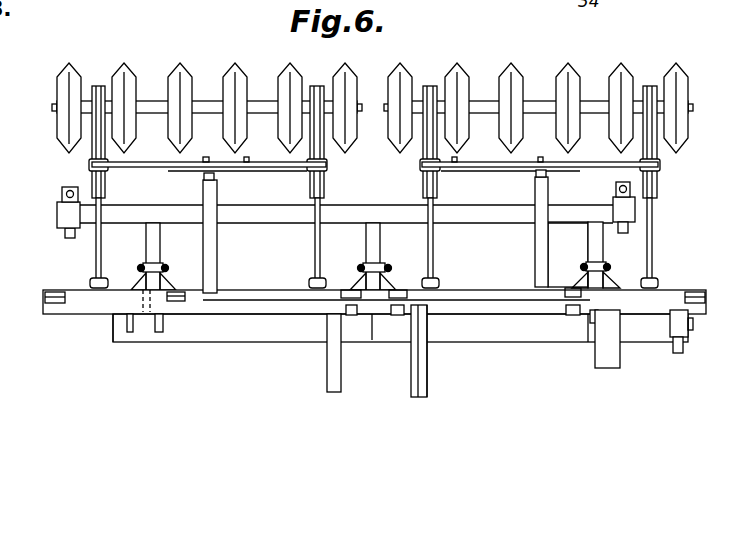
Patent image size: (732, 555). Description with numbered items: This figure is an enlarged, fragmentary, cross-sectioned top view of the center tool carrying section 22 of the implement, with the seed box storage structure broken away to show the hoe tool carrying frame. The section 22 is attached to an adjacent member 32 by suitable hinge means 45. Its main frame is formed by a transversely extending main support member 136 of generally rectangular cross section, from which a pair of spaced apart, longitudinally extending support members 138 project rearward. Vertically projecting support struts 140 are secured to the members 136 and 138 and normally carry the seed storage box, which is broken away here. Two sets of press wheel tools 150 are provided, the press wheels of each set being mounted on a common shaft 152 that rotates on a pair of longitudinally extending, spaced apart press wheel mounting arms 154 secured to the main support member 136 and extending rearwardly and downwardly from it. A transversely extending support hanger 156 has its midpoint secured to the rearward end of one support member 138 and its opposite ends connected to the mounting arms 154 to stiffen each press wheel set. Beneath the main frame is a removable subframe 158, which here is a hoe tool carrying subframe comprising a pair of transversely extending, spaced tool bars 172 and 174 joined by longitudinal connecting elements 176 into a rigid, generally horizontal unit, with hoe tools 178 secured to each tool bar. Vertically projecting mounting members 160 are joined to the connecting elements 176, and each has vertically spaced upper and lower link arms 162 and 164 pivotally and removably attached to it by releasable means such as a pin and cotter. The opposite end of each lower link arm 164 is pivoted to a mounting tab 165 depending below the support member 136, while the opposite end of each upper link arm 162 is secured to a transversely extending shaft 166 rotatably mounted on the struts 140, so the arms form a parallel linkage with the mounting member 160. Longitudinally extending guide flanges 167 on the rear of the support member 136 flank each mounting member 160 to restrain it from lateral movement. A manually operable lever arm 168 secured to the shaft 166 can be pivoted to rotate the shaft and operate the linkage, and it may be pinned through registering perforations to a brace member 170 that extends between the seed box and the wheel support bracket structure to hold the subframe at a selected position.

The center section 22 is at (672, 202).
The member 32 is at (607, 368).
The hinge means 45 is at (115, 343).
The main support member 136 is at (70, 315).
The longitudinally extending support members 138 is at (218, 242).
The support struts 140 is at (213, 178).
The press wheel set 150 is at (143, 58).
The common shaft 152 is at (203, 100).
The press wheel mounting arms 154 is at (90, 182).
The support hanger 156 is at (196, 166).
The subframe 158 is at (50, 211).
The mounting members 160 is at (150, 262).
The upper link arms 162 is at (587, 283).
The lower link arms 164 is at (112, 303).
The mounting tab 165 is at (160, 340).
The transversely extending shaft 166 is at (478, 303).
The guide flanges 167 is at (140, 288).
The lever arm 168 is at (431, 381).
The brace member 170 is at (411, 385).
The tool bar 172 is at (248, 330).
The tool bar 174 is at (278, 215).
The longitudinal connecting elements 176 is at (145, 232).
The hoe tools 178 is at (64, 235).